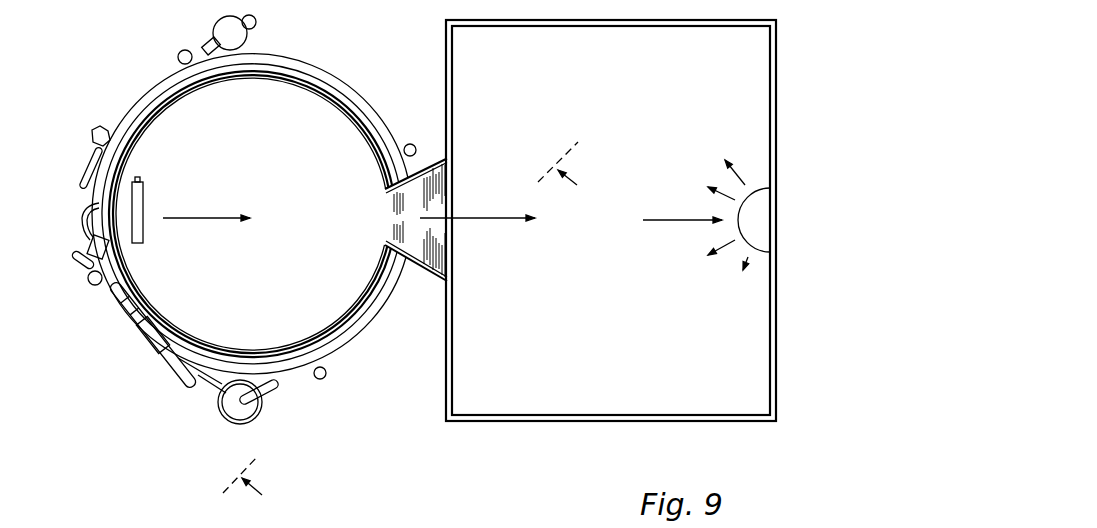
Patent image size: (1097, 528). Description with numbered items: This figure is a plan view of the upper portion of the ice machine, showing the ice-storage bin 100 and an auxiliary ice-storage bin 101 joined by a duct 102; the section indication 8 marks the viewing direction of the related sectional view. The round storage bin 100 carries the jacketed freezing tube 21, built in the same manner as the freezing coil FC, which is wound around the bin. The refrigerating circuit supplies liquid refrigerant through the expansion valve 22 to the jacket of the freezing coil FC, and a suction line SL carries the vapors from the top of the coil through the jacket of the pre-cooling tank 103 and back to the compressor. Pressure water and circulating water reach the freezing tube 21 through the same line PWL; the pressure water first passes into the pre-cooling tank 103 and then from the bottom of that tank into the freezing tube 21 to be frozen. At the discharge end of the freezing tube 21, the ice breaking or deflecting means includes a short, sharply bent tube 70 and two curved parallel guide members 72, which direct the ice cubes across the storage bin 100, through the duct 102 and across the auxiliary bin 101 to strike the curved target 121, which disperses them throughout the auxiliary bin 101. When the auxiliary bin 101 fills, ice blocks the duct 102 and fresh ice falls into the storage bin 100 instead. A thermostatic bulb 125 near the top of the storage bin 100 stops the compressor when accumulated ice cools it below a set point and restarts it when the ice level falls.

The expansion valve 22 is at (248, 44).
The curved parallel guide members 72 is at (90, 207).
The suction line SL is at (78, 250).
The freezing tube 21 is at (78, 263).
The thermostatic bulb 125 is at (145, 189).
The tube 70 is at (122, 246).
The ice-storage bin 100 is at (283, 346).
The freezing coil FC is at (362, 342).
The pre-cooling tank 103 is at (218, 418).
The pressure water line PWL is at (276, 393).
The duct 102 is at (437, 152).
The auxiliary ice-storage bin 101 is at (543, 420).
The curved target 121 is at (742, 250).
The section view indicator 8 is at (408, 332).